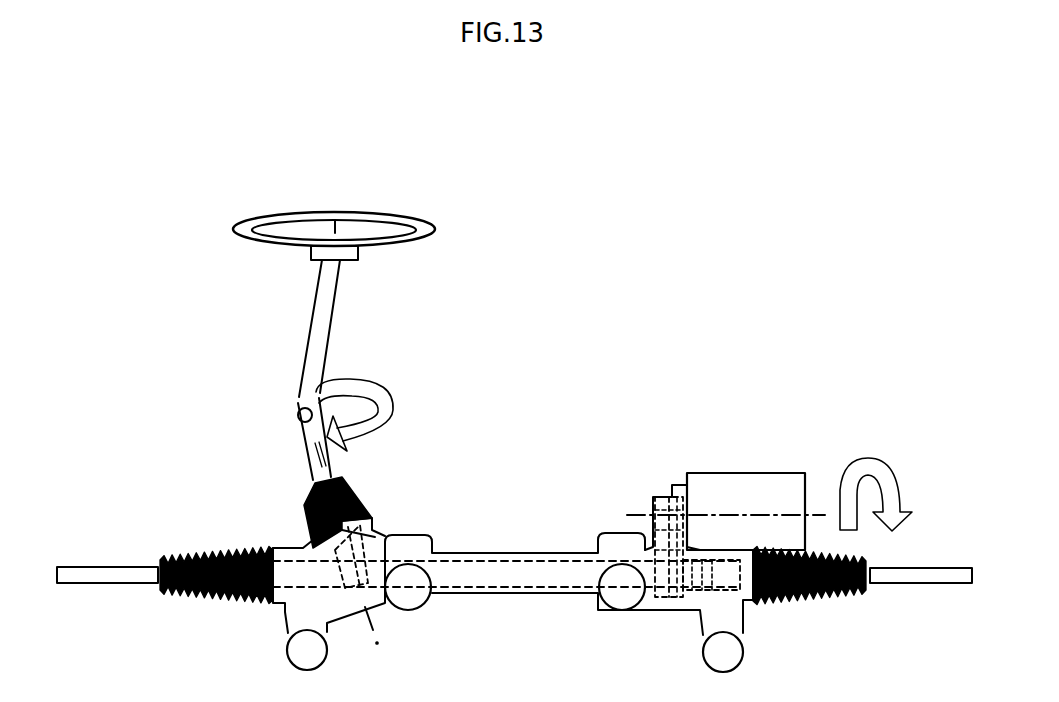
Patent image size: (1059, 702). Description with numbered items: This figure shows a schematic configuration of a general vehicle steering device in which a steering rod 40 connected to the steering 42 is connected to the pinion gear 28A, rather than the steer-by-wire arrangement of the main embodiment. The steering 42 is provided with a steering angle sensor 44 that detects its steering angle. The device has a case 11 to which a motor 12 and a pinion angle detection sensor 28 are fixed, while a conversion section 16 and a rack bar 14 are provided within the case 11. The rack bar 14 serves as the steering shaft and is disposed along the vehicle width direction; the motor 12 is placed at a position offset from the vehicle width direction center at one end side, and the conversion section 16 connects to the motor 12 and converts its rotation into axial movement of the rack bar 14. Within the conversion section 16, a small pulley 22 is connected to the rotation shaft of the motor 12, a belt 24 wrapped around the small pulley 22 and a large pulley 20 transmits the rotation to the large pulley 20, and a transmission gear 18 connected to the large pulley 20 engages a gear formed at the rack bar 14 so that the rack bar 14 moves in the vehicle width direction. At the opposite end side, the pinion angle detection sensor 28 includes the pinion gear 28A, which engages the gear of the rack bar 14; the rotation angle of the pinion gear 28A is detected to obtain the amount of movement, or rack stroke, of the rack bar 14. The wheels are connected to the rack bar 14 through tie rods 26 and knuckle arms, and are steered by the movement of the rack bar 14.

The steering 42 is at (408, 220).
The steering angle sensor 44 is at (357, 252).
The steering rod 40 is at (302, 443).
The pinion angle detection sensor 28 is at (362, 484).
The pinion gear 28A is at (360, 556).
The case 11 is at (503, 552).
The rack bar 14 is at (747, 602).
The motor 12 is at (775, 473).
The conversion section 16 is at (718, 425).
The transmission gear 18 is at (700, 547).
The large pulley 20 is at (650, 545).
The small pulley 22 is at (652, 540).
The belt 24 is at (677, 492).
The tie rod 26 is at (100, 566).